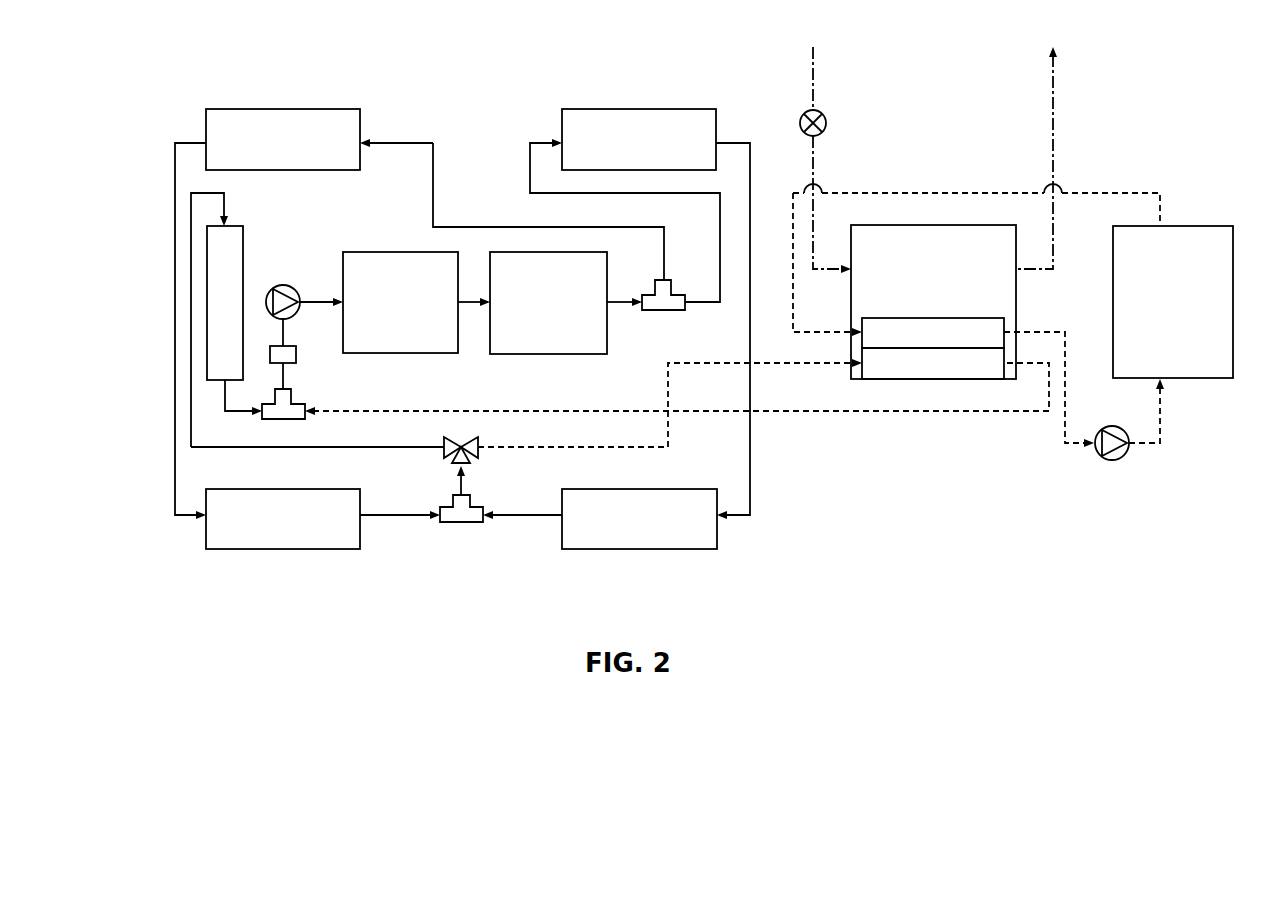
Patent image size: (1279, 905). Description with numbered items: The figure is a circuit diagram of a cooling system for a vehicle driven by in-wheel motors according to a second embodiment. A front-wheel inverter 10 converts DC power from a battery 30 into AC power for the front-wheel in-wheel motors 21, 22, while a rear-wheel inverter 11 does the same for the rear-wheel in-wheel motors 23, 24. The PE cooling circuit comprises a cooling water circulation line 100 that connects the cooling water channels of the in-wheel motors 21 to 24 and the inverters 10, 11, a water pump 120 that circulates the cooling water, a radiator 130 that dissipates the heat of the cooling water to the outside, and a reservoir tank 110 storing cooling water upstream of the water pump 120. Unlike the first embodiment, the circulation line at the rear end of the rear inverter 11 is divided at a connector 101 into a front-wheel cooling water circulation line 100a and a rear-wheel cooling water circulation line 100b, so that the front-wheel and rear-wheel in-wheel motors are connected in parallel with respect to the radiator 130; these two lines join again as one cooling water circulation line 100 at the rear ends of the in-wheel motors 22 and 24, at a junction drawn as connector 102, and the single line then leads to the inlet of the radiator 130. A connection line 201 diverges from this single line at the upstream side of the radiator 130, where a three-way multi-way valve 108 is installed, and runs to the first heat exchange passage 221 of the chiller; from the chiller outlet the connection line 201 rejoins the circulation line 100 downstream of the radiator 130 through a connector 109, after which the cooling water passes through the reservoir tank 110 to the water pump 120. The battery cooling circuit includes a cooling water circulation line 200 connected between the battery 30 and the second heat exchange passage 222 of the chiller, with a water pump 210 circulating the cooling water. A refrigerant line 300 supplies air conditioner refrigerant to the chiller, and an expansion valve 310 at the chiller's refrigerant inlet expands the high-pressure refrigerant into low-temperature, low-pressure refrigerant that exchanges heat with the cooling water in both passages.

The front-wheel inverter 10 is at (397, 252).
The rear-wheel inverter 11 is at (607, 327).
The front-wheel in-wheel motor 21 is at (273, 109).
The front-wheel in-wheel motor 22 is at (290, 549).
The rear-wheel in-wheel motor 23 is at (673, 109).
The rear-wheel in-wheel motor 24 is at (635, 549).
The battery 30 is at (1208, 226).
The cooling water circulation line 100 is at (284, 337).
The front-wheel cooling water circulation line 100a is at (175, 183).
The rear-wheel cooling water circulation line 100b is at (560, 193).
The connector 101 is at (670, 312).
The second junction 102 is at (462, 523).
The 3-way valve 108 is at (453, 432).
The connector 109 is at (265, 419).
The reservoir tank 110 is at (296, 355).
The water pump 120 is at (283, 285).
The radiator 130 is at (207, 262).
The cooling water circulation line 200 is at (1093, 193).
The connection line 201 is at (668, 388).
The water pump 210 is at (1122, 460).
The first heat exchange passage 221 is at (977, 363).
The second heat exchange passage 222 is at (887, 335).
The refrigerant line 300 is at (1050, 108).
The expansion valve 310 is at (826, 125).